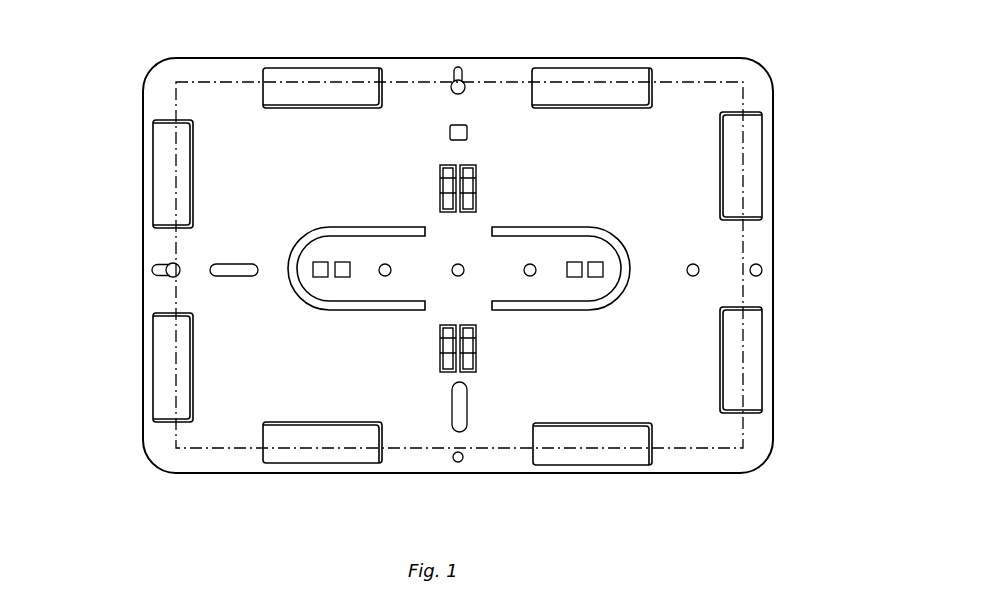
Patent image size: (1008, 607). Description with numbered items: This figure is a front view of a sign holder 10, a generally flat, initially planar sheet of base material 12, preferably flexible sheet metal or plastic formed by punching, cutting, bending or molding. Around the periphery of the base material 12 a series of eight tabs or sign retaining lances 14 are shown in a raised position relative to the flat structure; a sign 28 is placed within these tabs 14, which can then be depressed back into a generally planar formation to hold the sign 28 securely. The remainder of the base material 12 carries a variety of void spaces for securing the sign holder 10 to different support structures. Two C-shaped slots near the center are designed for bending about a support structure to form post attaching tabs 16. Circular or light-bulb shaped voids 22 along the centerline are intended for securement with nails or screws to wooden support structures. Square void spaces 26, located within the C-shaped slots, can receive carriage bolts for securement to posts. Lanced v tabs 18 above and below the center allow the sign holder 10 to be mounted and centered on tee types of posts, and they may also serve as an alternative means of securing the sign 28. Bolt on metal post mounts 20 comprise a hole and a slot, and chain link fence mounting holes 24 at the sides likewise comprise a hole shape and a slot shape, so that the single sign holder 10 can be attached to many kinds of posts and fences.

The sign holder 10 is at (128, 95).
The base material 12 is at (710, 68).
The tabs or sign retaining lances 14 is at (317, 78).
The post attaching tabs 16 is at (356, 247).
The lanced v tabs 18 is at (438, 180).
The bolt on metal post mounts 20 is at (468, 131).
The circular or light-bulb shaped voids 22 is at (450, 85).
The chain link fence mounting holes 24 is at (222, 262).
The square void spaces 26 is at (343, 262).
The sign 28 is at (743, 437).